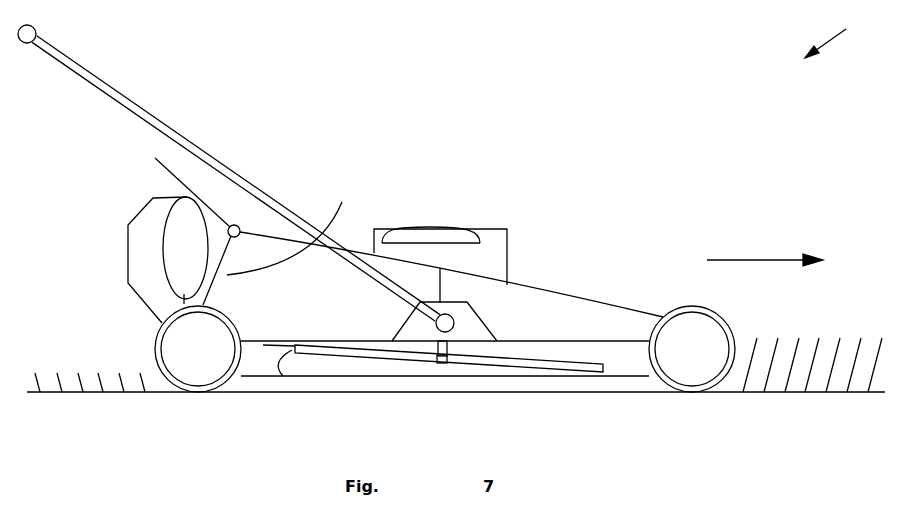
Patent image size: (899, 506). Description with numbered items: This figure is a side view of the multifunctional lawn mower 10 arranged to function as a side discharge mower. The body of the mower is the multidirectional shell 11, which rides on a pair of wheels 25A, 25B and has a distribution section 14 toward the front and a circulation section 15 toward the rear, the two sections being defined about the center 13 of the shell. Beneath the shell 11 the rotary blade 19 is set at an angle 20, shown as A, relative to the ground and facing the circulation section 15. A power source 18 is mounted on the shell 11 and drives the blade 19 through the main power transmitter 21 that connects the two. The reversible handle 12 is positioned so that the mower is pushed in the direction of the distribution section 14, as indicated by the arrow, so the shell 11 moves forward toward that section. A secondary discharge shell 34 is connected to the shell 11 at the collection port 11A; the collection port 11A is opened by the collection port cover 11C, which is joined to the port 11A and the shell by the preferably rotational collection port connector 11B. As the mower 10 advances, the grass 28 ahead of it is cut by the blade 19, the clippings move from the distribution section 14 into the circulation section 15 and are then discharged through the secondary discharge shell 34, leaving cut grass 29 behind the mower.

The multifunctional lawn mower 10 is at (836, 35).
The multidirectional shell 11 is at (530, 288).
The collection port 11A is at (291, 229).
The collection port connector 11B is at (245, 228).
The collection port cover 11C is at (193, 190).
The reversible handle 12 is at (105, 83).
The center 13 is at (442, 285).
The distribution section 14 is at (580, 320).
The circulation section 15 is at (277, 302).
The power source 18 is at (460, 233).
The rotary blade 19 is at (563, 365).
The angle 20 is at (275, 361).
The main power transmitter 21 is at (443, 363).
The wheel 25A is at (693, 363).
The wheel 25B is at (202, 363).
The grass 28 is at (782, 338).
The cut grass 29 is at (60, 380).
The secondary discharge shell 34 is at (128, 258).